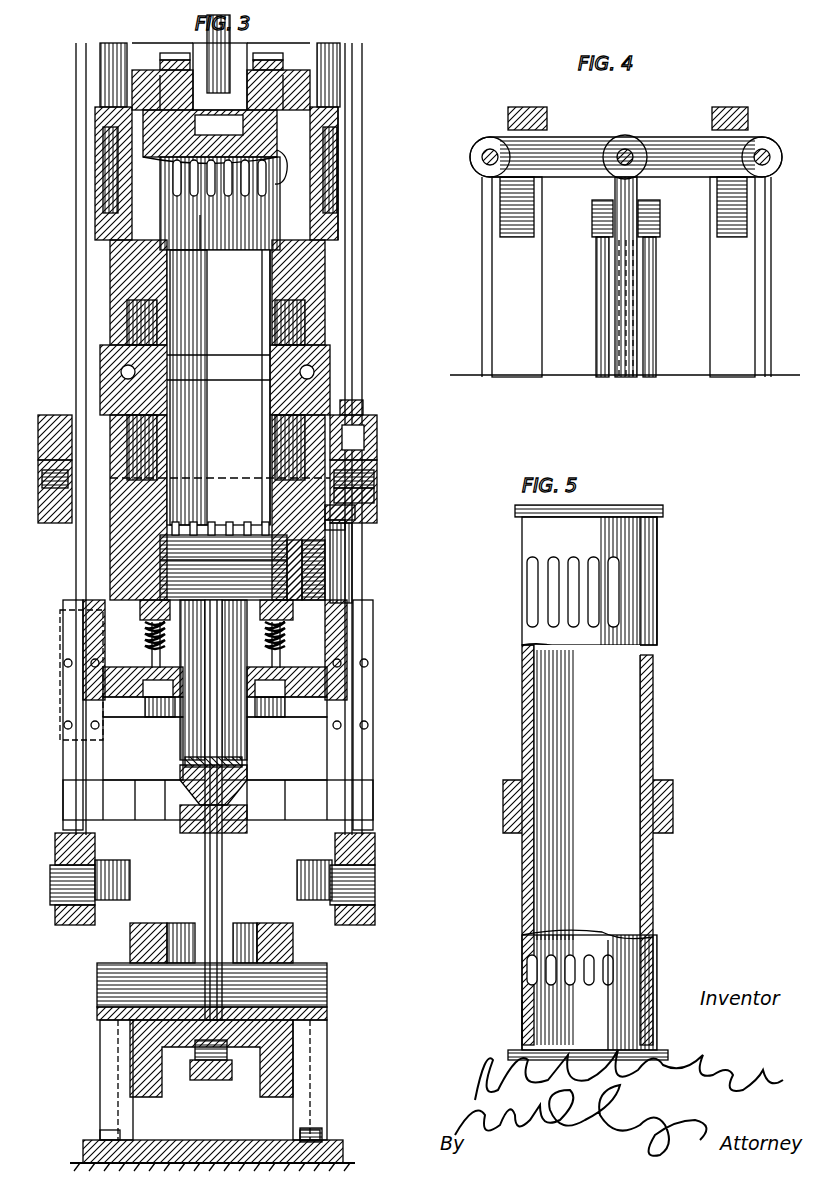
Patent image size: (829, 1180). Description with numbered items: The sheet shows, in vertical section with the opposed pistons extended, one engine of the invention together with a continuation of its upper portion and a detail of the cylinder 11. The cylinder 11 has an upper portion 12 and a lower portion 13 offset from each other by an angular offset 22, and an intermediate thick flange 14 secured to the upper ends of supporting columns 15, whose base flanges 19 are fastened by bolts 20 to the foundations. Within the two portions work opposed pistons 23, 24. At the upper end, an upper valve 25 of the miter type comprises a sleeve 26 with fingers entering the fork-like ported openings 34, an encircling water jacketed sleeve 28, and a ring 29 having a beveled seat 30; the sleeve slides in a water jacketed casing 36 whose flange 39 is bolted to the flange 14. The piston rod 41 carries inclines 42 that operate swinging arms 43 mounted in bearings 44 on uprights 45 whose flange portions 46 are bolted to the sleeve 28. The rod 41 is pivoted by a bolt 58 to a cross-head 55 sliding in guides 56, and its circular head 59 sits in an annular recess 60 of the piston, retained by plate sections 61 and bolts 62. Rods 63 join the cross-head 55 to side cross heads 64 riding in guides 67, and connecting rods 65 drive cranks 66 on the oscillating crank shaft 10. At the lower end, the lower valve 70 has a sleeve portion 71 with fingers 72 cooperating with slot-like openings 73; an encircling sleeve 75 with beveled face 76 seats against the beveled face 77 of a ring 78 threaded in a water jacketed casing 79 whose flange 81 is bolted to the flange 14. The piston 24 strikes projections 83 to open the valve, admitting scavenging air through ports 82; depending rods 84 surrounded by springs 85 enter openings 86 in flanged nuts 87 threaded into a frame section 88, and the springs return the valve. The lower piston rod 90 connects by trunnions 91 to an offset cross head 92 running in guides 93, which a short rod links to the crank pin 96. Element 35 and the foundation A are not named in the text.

In FIG. 3, the oscillating crank shaft 10 is at (190, 960).
In FIG. 3, the cylinder 11 is at (262, 275).
In FIG. 5, the cylinder 11 is at (625, 712).
In FIG. 3, the upper cylinder portion 12 is at (272, 293).
In FIG. 5, the upper cylinder portion 12 is at (652, 726).
In FIG. 3, the lower cylinder portion 13 is at (218, 387).
In FIG. 5, the lower cylinder portion 13 is at (625, 863).
In FIG. 3, the flange 14 is at (330, 362).
In FIG. 5, the flange 14 is at (672, 792).
In FIG. 3, the supporting columns 15 is at (100, 1040).
In FIG. 3, the base flanges 19 is at (340, 1150).
In FIG. 3, the bolts 20 is at (340, 1140).
In FIG. 3, the angular offset 22 is at (218, 369).
In FIG. 5, the angular offset 22 is at (587, 787).
In FIG. 3, the upper piston 23 is at (340, 105).
In FIG. 3, the lower piston 24 is at (302, 566).
In FIG. 5, the upper valve 25 is at (660, 511).
In FIG. 5, the sleeve 26 is at (650, 542).
In FIG. 3, the water jacketed sleeve 28 is at (300, 122).
In FIG. 3, the ring 29 is at (290, 150).
In FIG. 3, the beveled seat 30 is at (290, 178).
In FIG. 3, the ported openings 34 is at (220, 208).
In FIG. 5, the ported openings 34 is at (612, 625).
In FIG. 3, the guide slot 35 is at (103, 140).
In FIG. 3, the water jacketed casing 36 is at (315, 310).
In FIG. 3, the flange 39 is at (305, 332).
In FIG. 3, the piston rod 41 is at (207, 40).
In FIG. 4, the piston rod 41 is at (614, 370).
In FIG. 4, the inclines 42 is at (622, 370).
In FIG. 4, the swinging arms 43 is at (612, 255).
In FIG. 4, the bearings 44 is at (650, 230).
In FIG. 4, the uprights 45 is at (620, 345).
In FIG. 3, the flange portions 46 is at (150, 72).
In FIG. 4, the cross-head 55 is at (590, 135).
In FIG. 3, the guides 56 is at (100, 72).
In FIG. 4, the guides 56 is at (518, 270).
In FIG. 4, the bolt 58 is at (635, 150).
In FIG. 3, the circular head 59 is at (219, 185).
In FIG. 3, the annular recess 60 is at (221, 232).
In FIG. 3, the plate sections 61 is at (240, 108).
In FIG. 3, the bolts 62 is at (260, 67).
In FIG. 3, the rods 63 is at (76, 305).
In FIG. 4, the rods 63 is at (482, 320).
In FIG. 3, the cross heads 64 is at (60, 410).
In FIG. 3, the connecting rods 65 is at (350, 768).
In FIG. 3, the cranks 66 is at (107, 928).
In FIG. 3, the guides 67 is at (335, 583).
In FIG. 3, the lower valve 70 is at (287, 562).
In FIG. 5, the lower valve 70 is at (530, 1012).
In FIG. 5, the sleeve portion 71 is at (559, 1023).
In FIG. 5, the fingers 72 is at (600, 975).
In FIG. 3, the slot-like openings 73 is at (207, 525).
In FIG. 5, the slot-like openings 73 is at (597, 955).
In FIG. 3, the encircling sleeve 75 is at (335, 602).
In FIG. 3, the beveled face 76 is at (355, 527).
In FIG. 3, the beveled face 77 is at (345, 522).
In FIG. 3, the ring 78 is at (365, 493).
In FIG. 3, the water jacketed casing 79 is at (352, 442).
In FIG. 3, the flange 81 is at (363, 410).
In FIG. 3, the ports 82 is at (105, 690).
In FIG. 3, the projections 83 is at (150, 625).
In FIG. 3, the depending rods 84 is at (310, 700).
In FIG. 3, the springs 85 is at (140, 652).
In FIG. 3, the openings 86 is at (160, 717).
In FIG. 3, the flanged nuts 87 is at (300, 672).
In FIG. 3, the frame section 88 is at (310, 690).
In FIG. 3, the piston rod 90 is at (195, 760).
In FIG. 3, the trunnions 91 is at (248, 780).
In FIG. 3, the cross head 92 is at (250, 800).
In FIG. 3, the guides 93 is at (185, 835).
In FIG. 3, the crank pin 96 is at (205, 1082).
In FIG. 3, the foundation A is at (345, 1163).